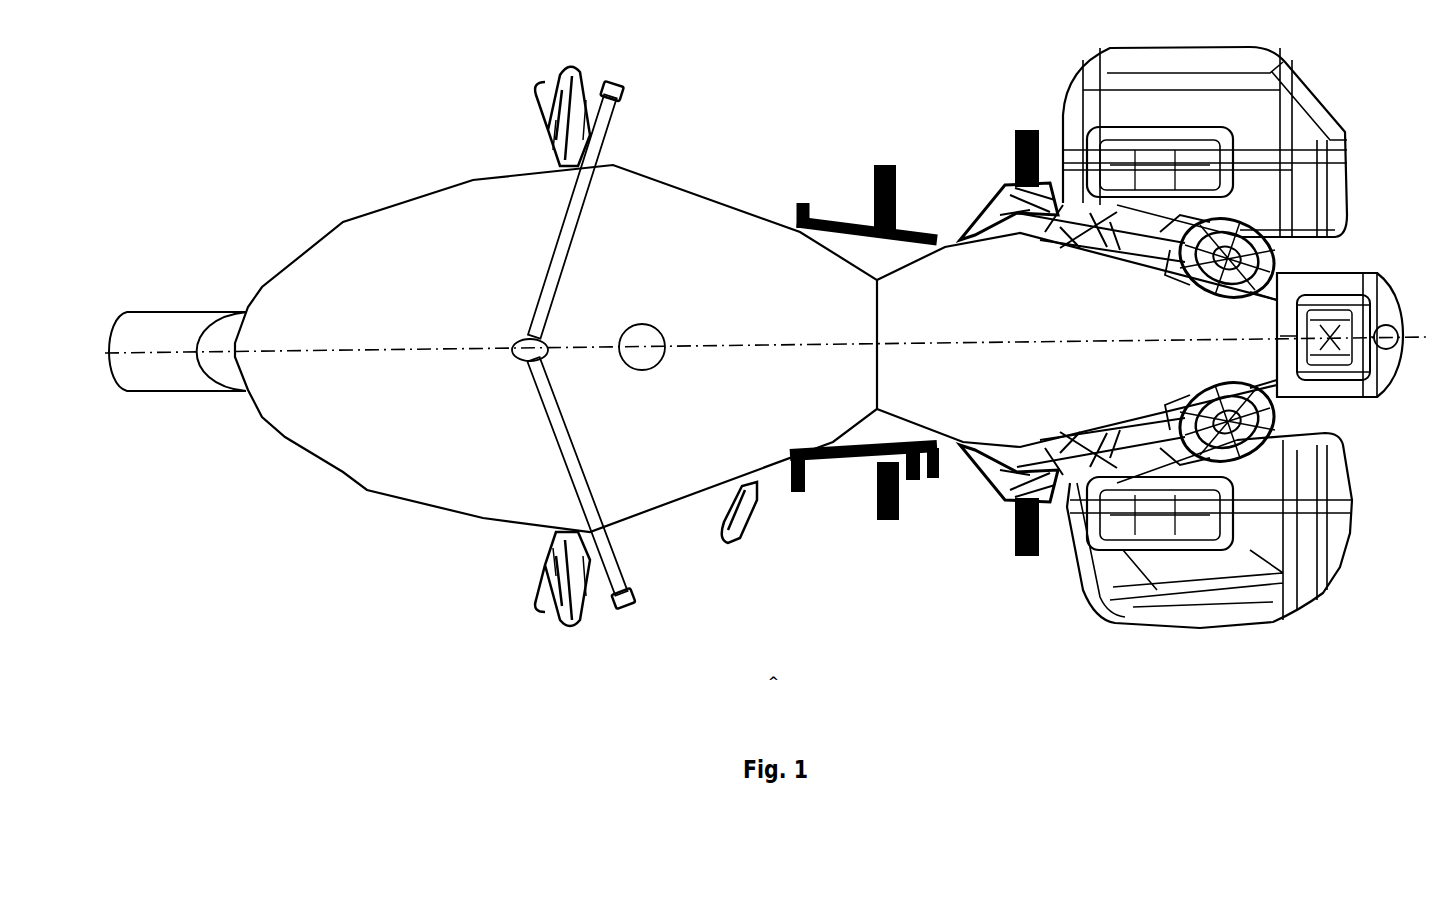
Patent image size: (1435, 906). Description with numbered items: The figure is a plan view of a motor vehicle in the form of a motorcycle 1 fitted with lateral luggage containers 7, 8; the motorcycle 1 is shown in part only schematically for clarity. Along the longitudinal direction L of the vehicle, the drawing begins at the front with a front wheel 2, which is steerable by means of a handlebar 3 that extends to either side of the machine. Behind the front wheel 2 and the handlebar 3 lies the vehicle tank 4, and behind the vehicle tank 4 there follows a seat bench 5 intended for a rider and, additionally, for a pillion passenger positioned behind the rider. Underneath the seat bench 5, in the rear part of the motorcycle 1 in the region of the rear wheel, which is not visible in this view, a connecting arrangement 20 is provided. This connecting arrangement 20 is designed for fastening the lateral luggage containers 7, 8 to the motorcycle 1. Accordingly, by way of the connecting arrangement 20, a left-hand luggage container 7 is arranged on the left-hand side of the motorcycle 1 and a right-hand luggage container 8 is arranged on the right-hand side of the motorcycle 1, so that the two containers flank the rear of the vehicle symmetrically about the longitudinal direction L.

The motorcycle 1 is at (720, 140).
The front wheel 2 is at (184, 327).
The handlebar 3 is at (605, 146).
The vehicle tank 4 is at (676, 292).
The seat bench 5 is at (959, 314).
The left-hand luggage container 7 is at (1088, 597).
The right-hand luggage container 8 is at (1075, 108).
The connecting arrangement 20 is at (1187, 243).
The longitudinal direction L is at (755, 341).